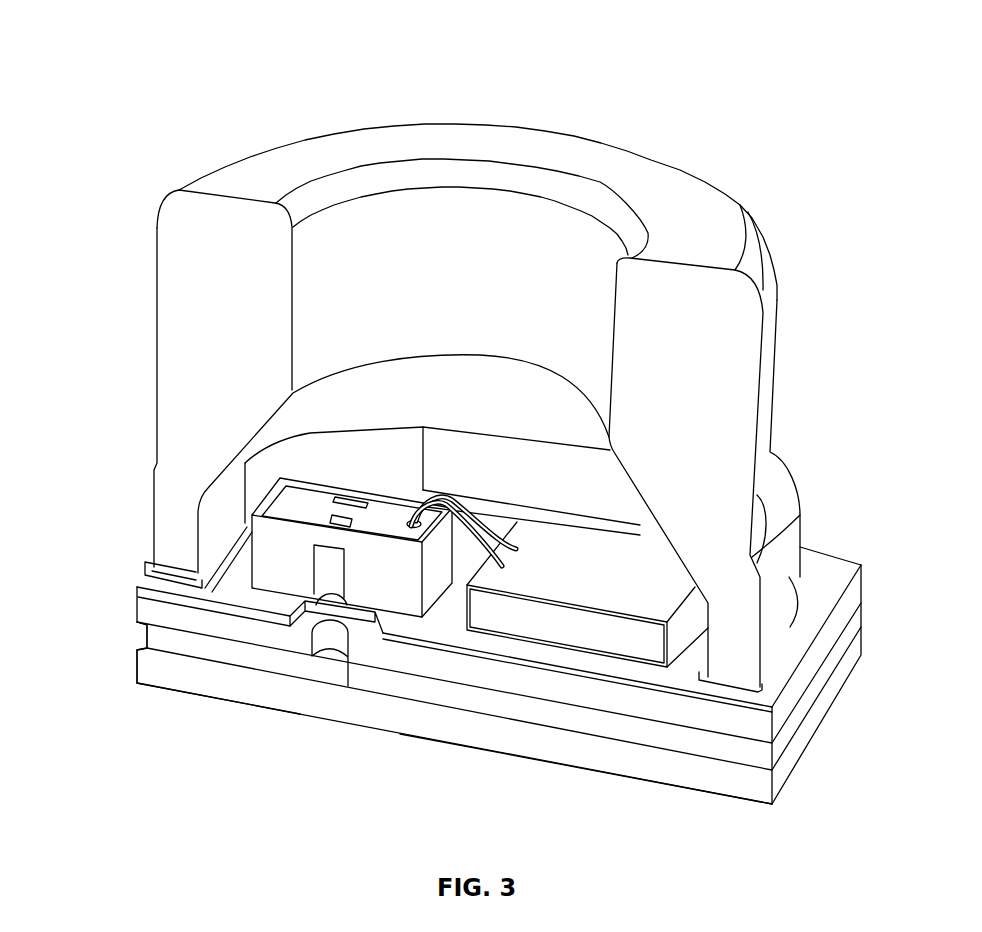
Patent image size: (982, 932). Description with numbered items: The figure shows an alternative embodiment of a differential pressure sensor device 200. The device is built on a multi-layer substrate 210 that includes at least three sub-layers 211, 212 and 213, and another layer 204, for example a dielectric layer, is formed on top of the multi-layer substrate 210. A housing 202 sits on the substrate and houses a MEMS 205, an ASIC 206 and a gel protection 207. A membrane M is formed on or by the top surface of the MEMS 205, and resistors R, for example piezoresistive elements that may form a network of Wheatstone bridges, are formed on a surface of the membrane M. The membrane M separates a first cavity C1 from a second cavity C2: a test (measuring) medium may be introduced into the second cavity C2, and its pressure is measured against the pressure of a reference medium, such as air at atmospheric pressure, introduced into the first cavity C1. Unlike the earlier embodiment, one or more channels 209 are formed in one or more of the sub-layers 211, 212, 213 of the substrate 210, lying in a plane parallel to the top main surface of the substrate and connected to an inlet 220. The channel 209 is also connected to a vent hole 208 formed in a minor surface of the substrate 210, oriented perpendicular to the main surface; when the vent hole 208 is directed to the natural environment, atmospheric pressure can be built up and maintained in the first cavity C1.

The differential pressure sensor device 200 is at (818, 58).
The housing 202 is at (500, 373).
The layer 204 is at (138, 577).
The MEMS 205 is at (243, 619).
The ASIC 206 is at (588, 630).
The gel protection 207 is at (488, 371).
The vent hole 208 is at (142, 636).
The channel 209 is at (220, 648).
The multi-layer substrate 210 is at (515, 674).
The sub-layer 211 is at (862, 632).
The sub-layer 212 is at (862, 612).
The sub-layer 213 is at (862, 578).
The inlet 220 is at (327, 660).
The first cavity C1 is at (403, 583).
The second cavity C2 is at (383, 238).
The membrane M is at (265, 529).
The resistors R is at (312, 503).